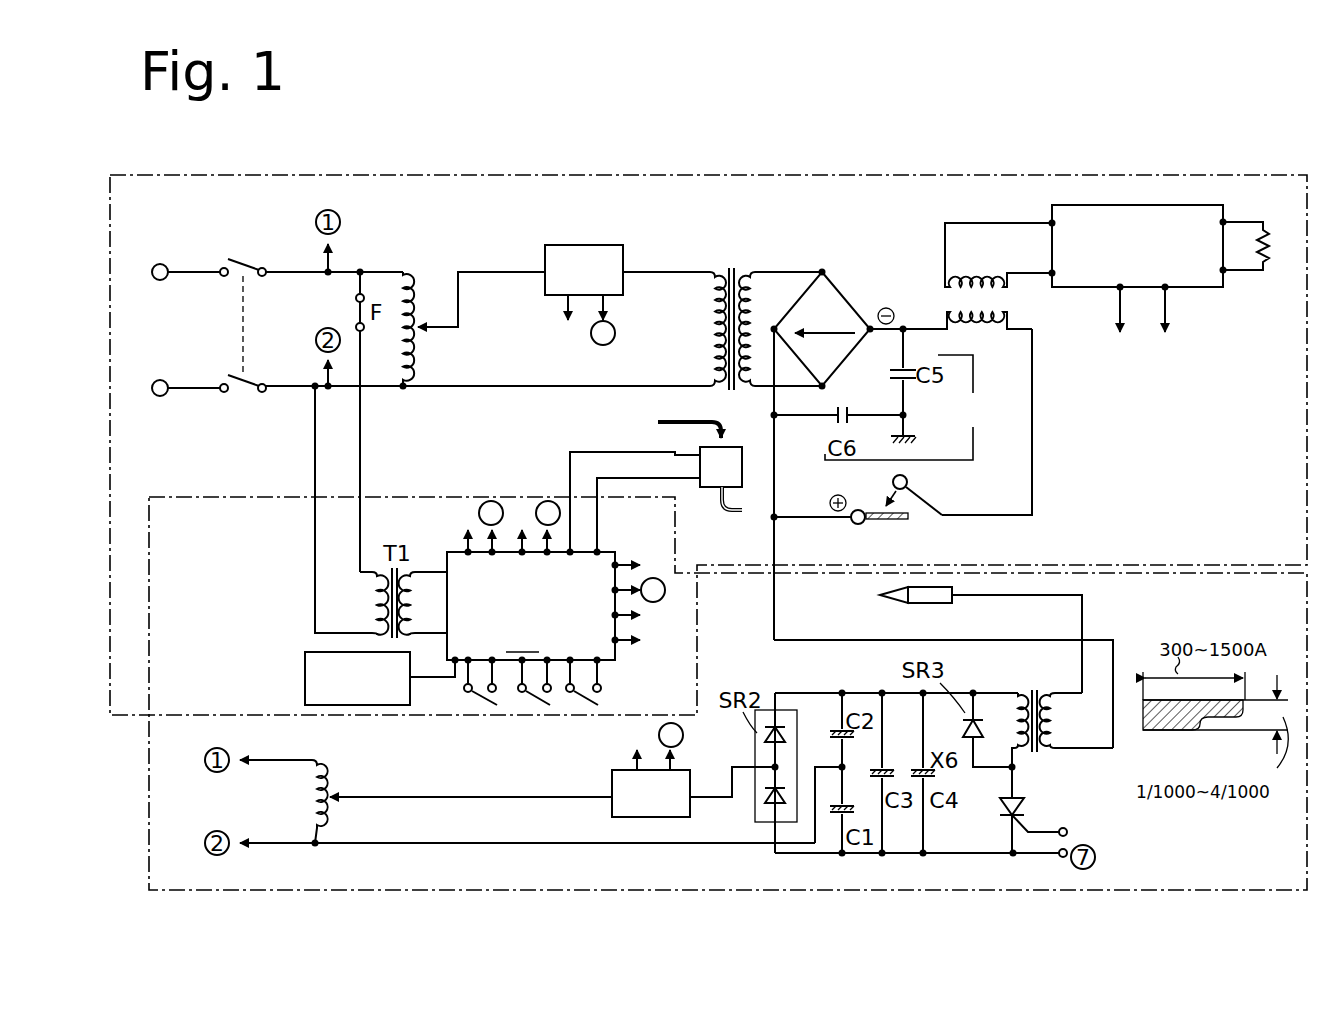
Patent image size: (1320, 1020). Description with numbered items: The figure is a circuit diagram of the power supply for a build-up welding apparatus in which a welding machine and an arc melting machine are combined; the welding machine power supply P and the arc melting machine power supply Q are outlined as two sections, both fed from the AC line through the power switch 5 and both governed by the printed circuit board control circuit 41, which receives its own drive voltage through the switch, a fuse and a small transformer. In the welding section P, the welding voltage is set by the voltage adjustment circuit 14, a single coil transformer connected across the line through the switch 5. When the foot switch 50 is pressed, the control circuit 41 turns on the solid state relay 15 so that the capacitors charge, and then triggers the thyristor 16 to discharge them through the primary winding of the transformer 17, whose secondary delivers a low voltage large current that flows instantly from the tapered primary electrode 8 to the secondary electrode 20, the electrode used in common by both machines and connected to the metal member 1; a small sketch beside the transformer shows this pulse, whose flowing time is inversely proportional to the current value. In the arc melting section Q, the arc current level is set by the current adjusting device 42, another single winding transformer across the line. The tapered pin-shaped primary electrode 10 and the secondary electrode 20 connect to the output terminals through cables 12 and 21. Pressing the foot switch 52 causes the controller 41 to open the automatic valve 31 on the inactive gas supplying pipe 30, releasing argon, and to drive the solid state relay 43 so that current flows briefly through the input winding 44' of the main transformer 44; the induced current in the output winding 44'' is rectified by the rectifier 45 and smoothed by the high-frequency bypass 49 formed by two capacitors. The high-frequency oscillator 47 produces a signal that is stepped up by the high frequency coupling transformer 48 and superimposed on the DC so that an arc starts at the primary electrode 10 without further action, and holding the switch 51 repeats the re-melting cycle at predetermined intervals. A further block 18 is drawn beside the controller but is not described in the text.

The metal member 1 is at (911, 520).
The power switch 5 is at (243, 263).
The primary electrode 8 is at (900, 606).
The primary electrode 10 is at (910, 481).
The cable 12 is at (1032, 484).
The voltage adjustment circuit 14 is at (333, 820).
The solid state relay 15 is at (612, 806).
The thyristor 16 is at (1000, 809).
The transformer 17 is at (1015, 689).
The setting unit 18 is at (305, 677).
The secondary electrode 20 is at (860, 525).
The cable 21 is at (808, 517).
The inactive gas supplying pipe 30 is at (712, 500).
The automatic valve 31 is at (744, 461).
The control circuit 41 is at (559, 592).
The current adjusting device 42 is at (446, 328).
The solid state relay 43 is at (594, 246).
The main transformer 44 is at (612, 295).
The input winding 44' is at (564, 311).
The output winding 44'' is at (780, 311).
The rectifier 45 is at (852, 303).
The high-frequency oscillator 47 is at (1050, 215).
The high frequency coupling transformer 48 is at (1012, 303).
The high-frequency bypass 49 is at (907, 407).
The foot switch 50 is at (537, 704).
The switch 51 is at (585, 704).
The foot switch 52 is at (483, 704).
The power supply circuit for the welding machine P is at (149, 805).
The power supply circuit for the arc melting machine Q is at (110, 400).